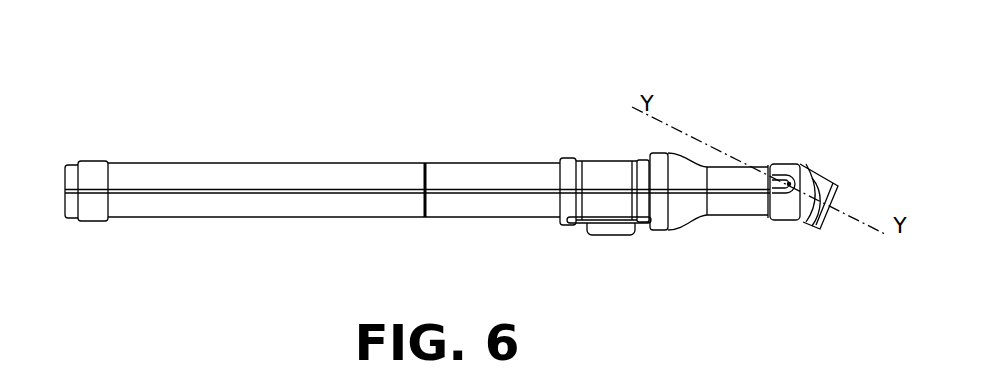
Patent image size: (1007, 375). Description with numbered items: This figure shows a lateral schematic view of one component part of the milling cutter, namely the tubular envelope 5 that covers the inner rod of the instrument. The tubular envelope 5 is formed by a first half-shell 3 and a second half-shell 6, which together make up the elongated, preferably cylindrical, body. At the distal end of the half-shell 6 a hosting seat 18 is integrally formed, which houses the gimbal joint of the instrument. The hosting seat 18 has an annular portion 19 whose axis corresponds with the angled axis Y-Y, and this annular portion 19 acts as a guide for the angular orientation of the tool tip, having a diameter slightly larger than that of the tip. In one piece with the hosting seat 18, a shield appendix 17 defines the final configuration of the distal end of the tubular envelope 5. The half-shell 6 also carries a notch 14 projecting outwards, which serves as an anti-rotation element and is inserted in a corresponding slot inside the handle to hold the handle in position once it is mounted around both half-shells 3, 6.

The first half-shell 3 is at (262, 173).
The tubular envelope 5 is at (462, 103).
The second half-shell 6 is at (319, 213).
The notch 14 is at (605, 232).
The shield appendix 17 is at (804, 183).
The hosting seat 18 is at (797, 186).
The annular portion 19 is at (815, 227).